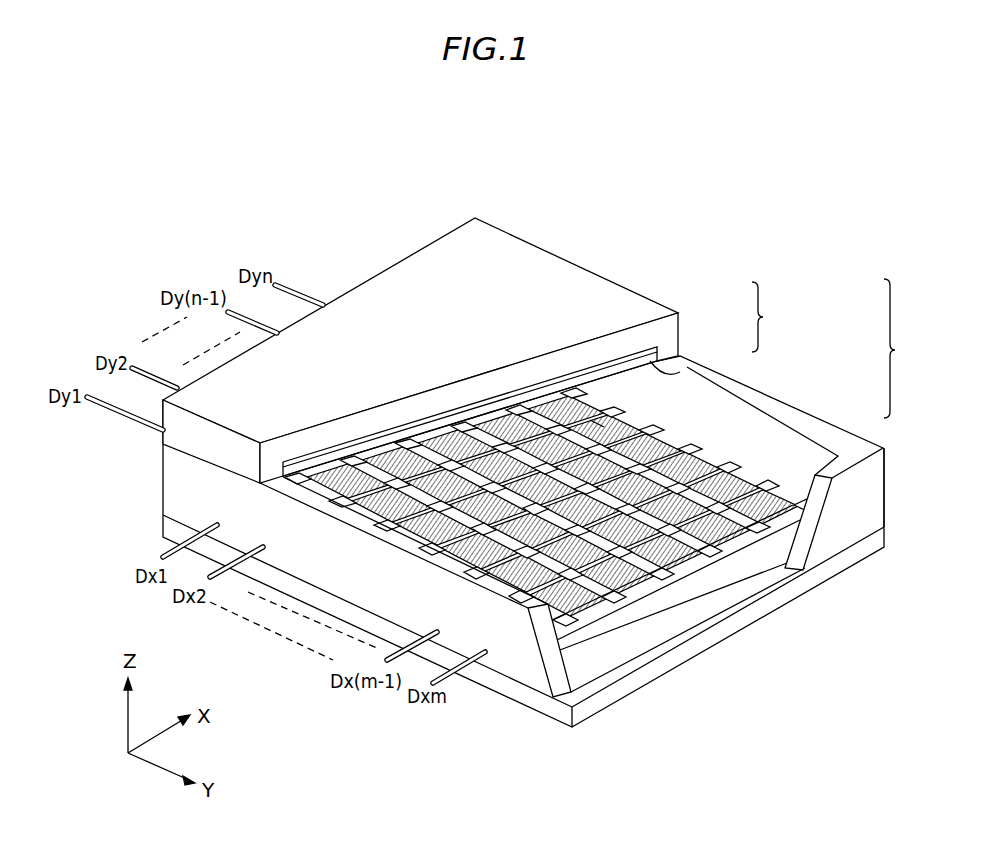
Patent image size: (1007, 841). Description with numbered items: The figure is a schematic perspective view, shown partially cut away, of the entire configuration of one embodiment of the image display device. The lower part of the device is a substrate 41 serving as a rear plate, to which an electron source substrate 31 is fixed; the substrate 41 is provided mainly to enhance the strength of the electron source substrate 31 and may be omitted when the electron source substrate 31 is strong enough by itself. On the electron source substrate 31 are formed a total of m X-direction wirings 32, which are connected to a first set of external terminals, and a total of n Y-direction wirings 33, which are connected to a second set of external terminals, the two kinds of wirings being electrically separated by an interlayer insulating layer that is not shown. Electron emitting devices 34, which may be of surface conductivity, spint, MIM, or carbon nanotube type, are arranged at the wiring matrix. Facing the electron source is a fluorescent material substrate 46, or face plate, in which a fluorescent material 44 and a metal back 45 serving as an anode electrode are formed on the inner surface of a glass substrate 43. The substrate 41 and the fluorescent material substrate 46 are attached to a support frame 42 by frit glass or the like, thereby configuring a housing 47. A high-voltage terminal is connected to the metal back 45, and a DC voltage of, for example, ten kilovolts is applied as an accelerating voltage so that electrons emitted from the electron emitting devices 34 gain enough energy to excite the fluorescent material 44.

The electron source substrate 31 is at (718, 563).
The X-direction wiring 32 is at (660, 578).
The Y-direction wiring 33 is at (597, 633).
The electron emitting device 34 is at (597, 423).
The substrate (rear plate) 41 is at (860, 550).
The support frame 42 is at (783, 407).
The glass substrate 43 is at (645, 328).
The fluorescent material 44 is at (653, 353).
The metal back 45 is at (682, 373).
The fluorescent material substrate (face plate) 46 is at (772, 317).
The housing 47 is at (904, 348).